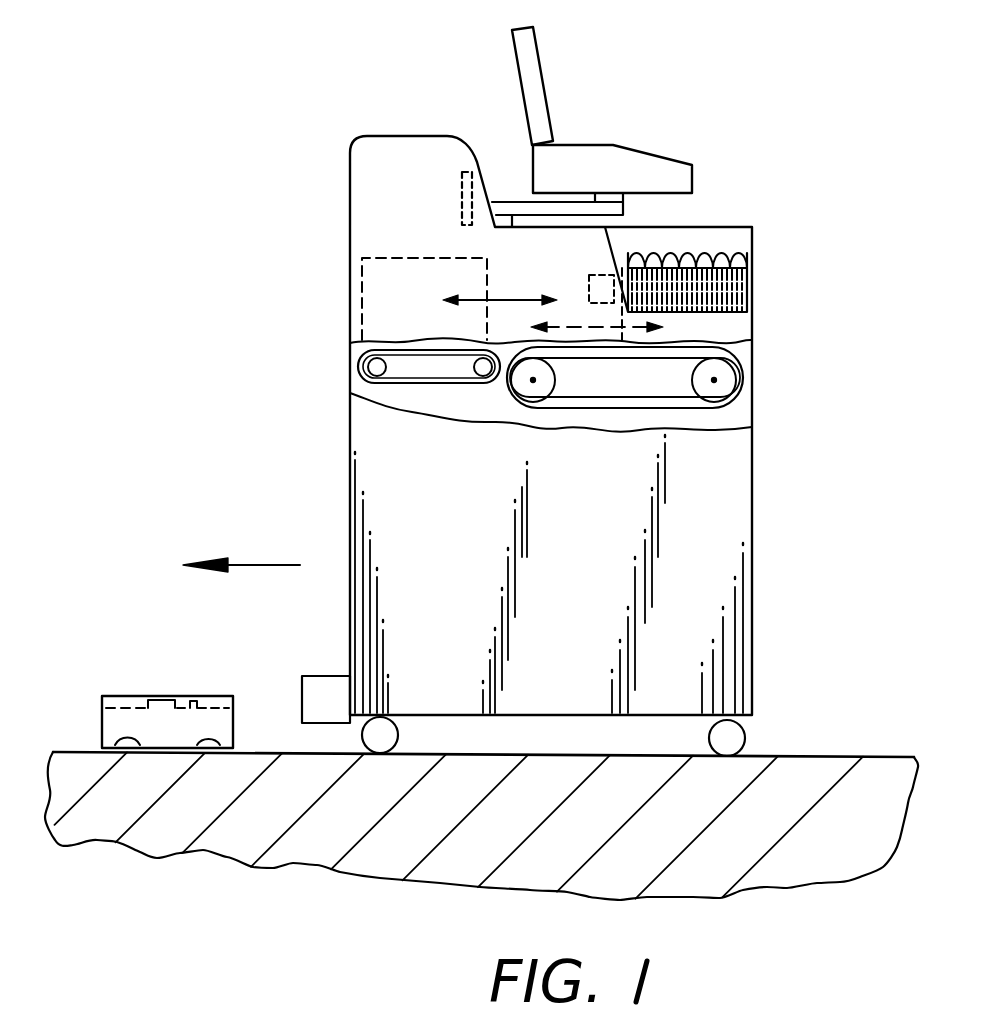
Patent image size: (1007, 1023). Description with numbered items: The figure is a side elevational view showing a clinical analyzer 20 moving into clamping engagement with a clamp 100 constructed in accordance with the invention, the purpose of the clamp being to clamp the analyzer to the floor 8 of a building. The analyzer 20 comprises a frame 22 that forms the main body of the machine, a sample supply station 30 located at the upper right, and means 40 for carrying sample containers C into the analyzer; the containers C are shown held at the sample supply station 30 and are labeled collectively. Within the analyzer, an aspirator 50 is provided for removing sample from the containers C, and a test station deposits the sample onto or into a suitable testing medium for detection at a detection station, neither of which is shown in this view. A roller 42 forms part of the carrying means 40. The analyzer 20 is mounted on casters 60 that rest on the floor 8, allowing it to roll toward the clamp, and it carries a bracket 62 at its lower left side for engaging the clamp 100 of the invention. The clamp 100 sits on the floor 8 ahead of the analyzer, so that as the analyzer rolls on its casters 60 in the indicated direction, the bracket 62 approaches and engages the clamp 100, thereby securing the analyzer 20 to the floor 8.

The floor 8 is at (871, 768).
The clinical analyzer 20 is at (793, 500).
The frame 22 is at (585, 582).
The sample supply station 30 is at (748, 290).
The means for carrying sample containers 40 is at (647, 410).
The roller 42 is at (713, 388).
The aspirator 50 is at (458, 188).
The casters 60 is at (400, 727).
The bracket 62 is at (325, 676).
The clamp 100 is at (118, 679).
The sample containers C is at (735, 253).